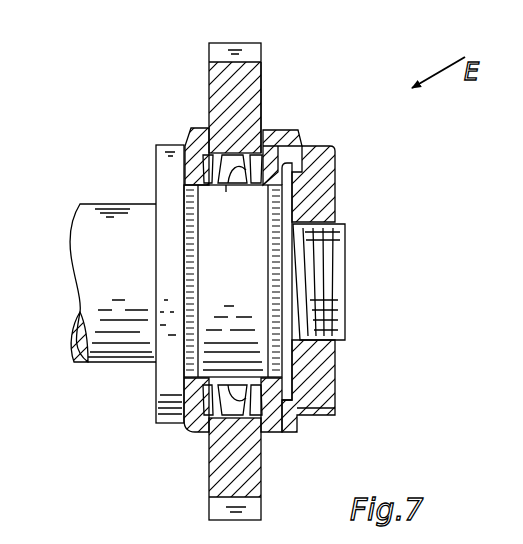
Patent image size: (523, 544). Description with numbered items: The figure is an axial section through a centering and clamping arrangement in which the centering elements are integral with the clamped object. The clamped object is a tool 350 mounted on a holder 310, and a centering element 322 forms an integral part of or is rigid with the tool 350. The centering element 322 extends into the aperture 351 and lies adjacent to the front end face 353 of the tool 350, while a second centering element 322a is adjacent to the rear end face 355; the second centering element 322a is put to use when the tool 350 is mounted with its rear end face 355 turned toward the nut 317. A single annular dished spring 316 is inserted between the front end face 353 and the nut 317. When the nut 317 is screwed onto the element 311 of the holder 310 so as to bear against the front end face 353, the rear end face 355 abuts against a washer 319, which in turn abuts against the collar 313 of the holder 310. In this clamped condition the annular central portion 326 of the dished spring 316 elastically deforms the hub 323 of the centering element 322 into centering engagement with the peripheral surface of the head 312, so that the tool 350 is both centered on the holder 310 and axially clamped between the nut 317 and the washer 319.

The holder 310 is at (70, 201).
The element of the holder 311 is at (338, 259).
The head 312 is at (248, 279).
The collar 313 is at (163, 177).
The annular dished spring 316 is at (265, 132).
The nut 317 is at (325, 208).
The washer 319 is at (193, 136).
The centering element 322 is at (253, 188).
The second centering element 322a is at (190, 432).
The hub 323 is at (232, 196).
The annular central portion 326 is at (284, 176).
The tool 350 is at (268, 53).
The aperture 351 is at (262, 440).
The front end face 353 is at (262, 93).
The rear end face 355 is at (211, 487).